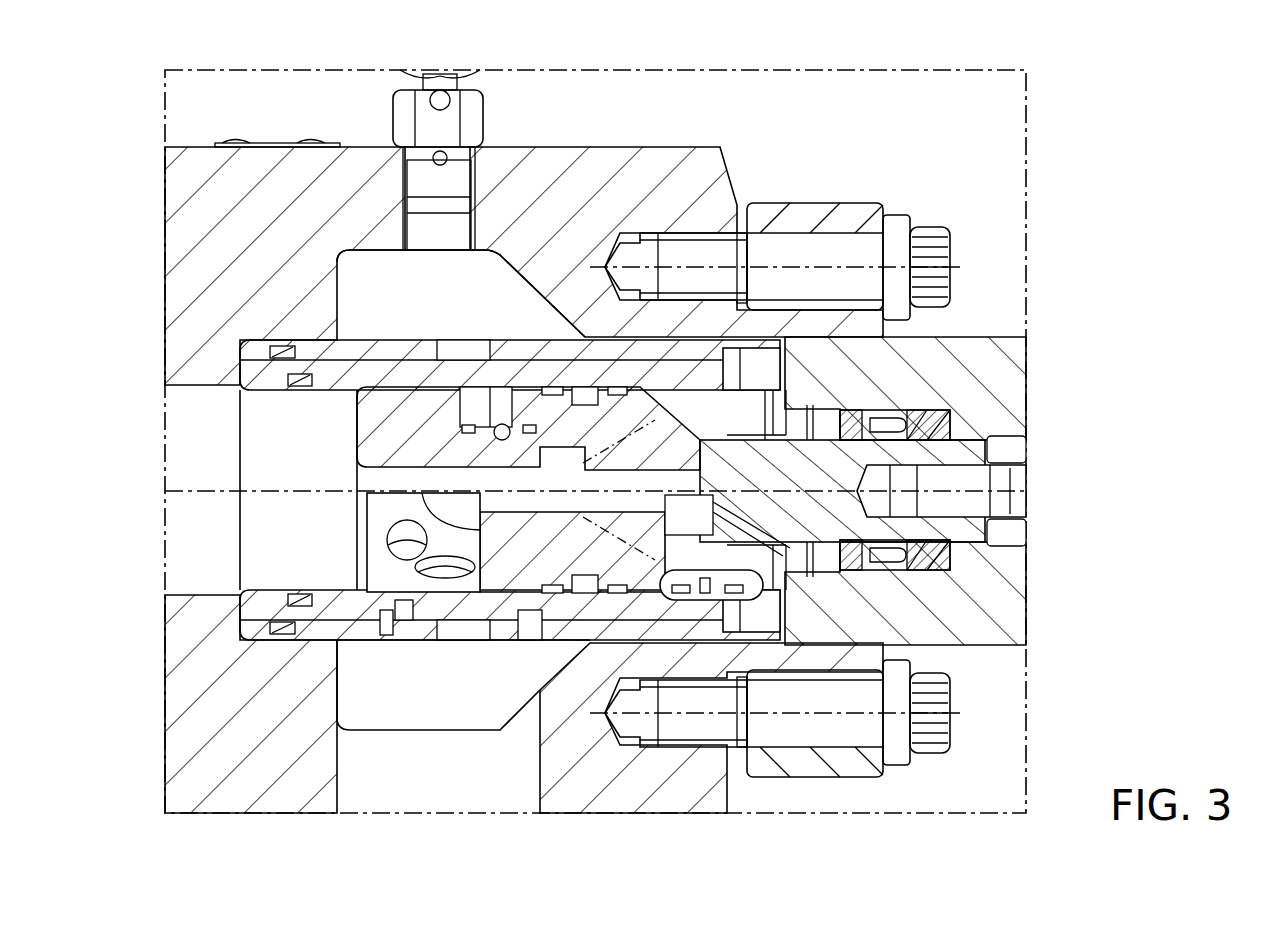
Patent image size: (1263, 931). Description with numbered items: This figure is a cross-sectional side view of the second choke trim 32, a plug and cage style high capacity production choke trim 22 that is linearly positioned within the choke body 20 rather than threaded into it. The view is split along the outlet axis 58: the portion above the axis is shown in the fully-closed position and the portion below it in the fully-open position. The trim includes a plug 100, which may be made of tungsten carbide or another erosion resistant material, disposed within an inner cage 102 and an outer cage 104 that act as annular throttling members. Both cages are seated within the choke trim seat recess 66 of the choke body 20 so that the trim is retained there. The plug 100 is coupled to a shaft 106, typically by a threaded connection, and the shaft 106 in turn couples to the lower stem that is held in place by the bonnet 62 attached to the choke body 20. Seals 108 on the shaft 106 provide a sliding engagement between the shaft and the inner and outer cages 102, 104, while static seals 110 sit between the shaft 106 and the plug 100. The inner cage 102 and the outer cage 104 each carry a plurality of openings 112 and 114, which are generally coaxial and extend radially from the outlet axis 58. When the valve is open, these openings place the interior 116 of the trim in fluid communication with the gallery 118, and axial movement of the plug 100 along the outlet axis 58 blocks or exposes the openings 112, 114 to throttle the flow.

The choke body 20 is at (185, 222).
The choke trim 22 is at (472, 310).
The outer cage 104 is at (558, 388).
The seals 108 is at (622, 388).
The inner cage 102 is at (248, 380).
The plug 100 is at (375, 415).
The interior 116 is at (280, 476).
The bonnet 62 is at (987, 362).
The outlet axis 58 is at (208, 497).
The openings 112 is at (385, 540).
The choke trim seat recess 66 is at (243, 622).
The shaft 106 is at (955, 550).
The gallery 118 is at (477, 684).
The openings 114 is at (387, 640).
The second choke trim 32 is at (455, 647).
The seals 110 is at (630, 650).